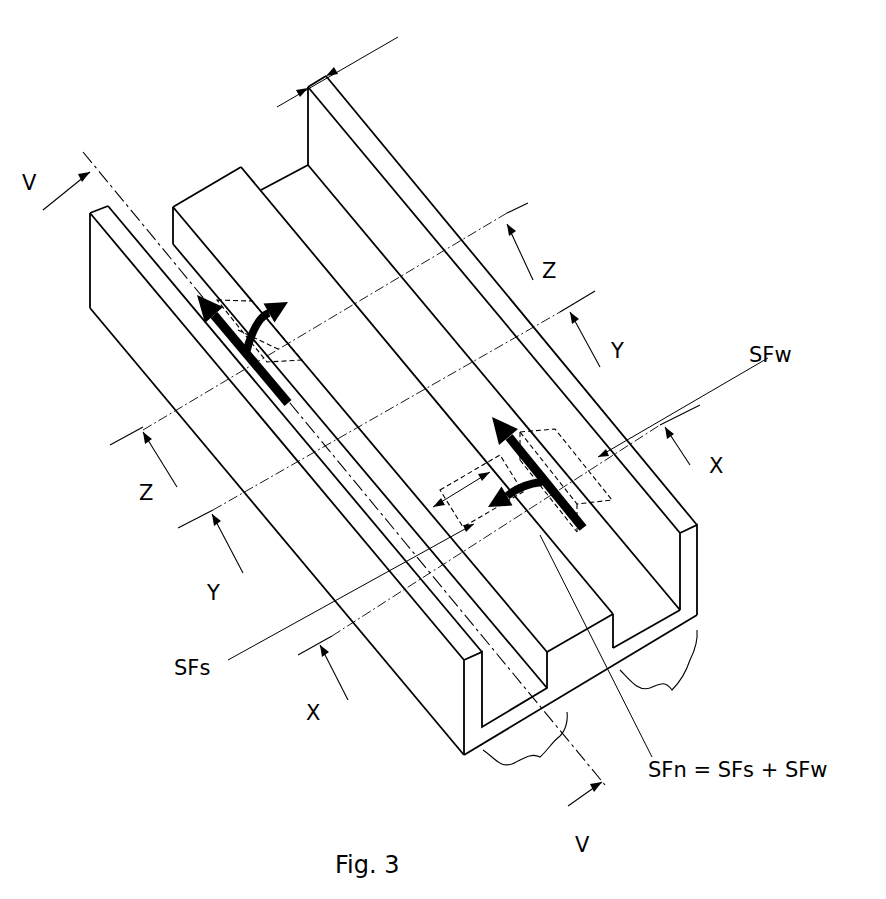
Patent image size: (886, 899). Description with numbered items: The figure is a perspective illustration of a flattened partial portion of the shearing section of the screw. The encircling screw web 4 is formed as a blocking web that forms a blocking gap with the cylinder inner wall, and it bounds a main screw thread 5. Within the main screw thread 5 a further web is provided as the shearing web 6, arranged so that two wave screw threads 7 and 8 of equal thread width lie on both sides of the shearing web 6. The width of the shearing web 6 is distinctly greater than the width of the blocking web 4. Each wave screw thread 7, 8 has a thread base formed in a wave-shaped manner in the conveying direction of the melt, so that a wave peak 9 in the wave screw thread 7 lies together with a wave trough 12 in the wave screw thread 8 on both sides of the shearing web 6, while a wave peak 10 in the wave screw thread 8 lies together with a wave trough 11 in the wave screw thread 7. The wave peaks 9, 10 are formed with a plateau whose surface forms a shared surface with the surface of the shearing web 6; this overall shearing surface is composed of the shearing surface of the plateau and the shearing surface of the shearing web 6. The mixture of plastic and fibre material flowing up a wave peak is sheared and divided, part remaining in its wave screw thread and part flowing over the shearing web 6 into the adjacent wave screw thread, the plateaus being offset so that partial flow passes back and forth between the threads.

The screw web 4 is at (90, 237).
The main screw thread 5 is at (307, 140).
The shearing web 6 is at (537, 598).
The wave screw thread 7 is at (495, 690).
The wave screw thread 8 is at (647, 596).
The wave peak 9 is at (213, 340).
The wave peak 10 is at (558, 458).
The wave trough 11 is at (153, 277).
The wave trough 12 is at (378, 277).